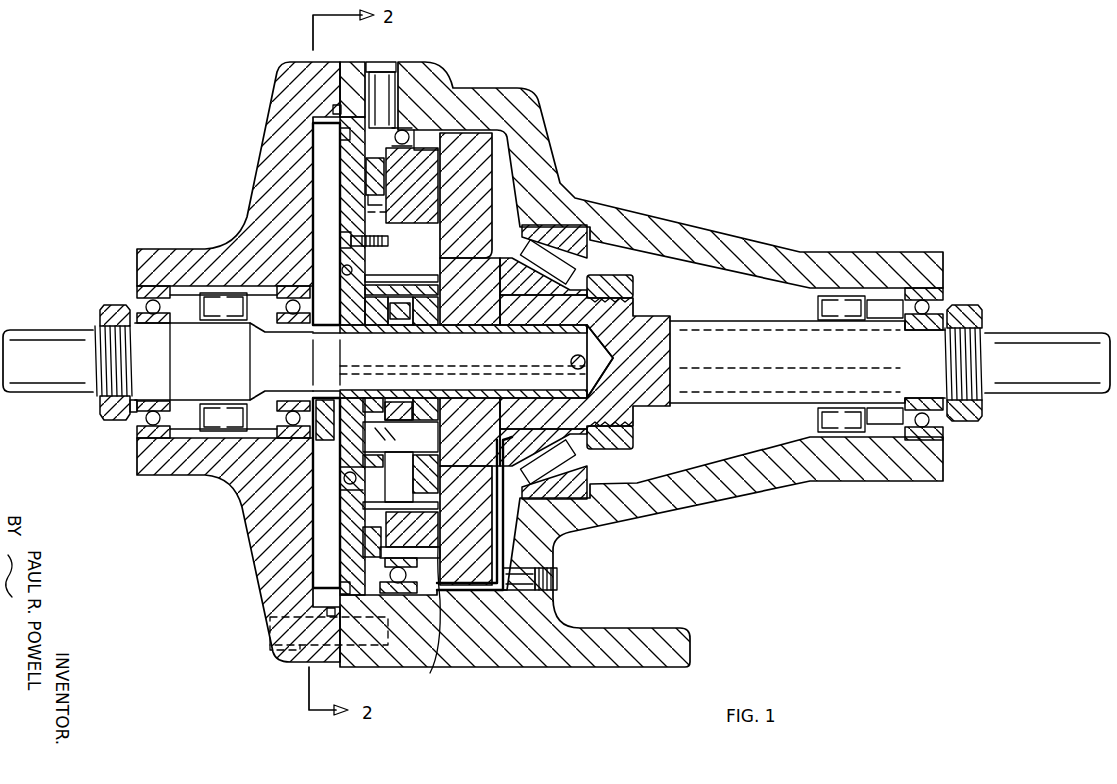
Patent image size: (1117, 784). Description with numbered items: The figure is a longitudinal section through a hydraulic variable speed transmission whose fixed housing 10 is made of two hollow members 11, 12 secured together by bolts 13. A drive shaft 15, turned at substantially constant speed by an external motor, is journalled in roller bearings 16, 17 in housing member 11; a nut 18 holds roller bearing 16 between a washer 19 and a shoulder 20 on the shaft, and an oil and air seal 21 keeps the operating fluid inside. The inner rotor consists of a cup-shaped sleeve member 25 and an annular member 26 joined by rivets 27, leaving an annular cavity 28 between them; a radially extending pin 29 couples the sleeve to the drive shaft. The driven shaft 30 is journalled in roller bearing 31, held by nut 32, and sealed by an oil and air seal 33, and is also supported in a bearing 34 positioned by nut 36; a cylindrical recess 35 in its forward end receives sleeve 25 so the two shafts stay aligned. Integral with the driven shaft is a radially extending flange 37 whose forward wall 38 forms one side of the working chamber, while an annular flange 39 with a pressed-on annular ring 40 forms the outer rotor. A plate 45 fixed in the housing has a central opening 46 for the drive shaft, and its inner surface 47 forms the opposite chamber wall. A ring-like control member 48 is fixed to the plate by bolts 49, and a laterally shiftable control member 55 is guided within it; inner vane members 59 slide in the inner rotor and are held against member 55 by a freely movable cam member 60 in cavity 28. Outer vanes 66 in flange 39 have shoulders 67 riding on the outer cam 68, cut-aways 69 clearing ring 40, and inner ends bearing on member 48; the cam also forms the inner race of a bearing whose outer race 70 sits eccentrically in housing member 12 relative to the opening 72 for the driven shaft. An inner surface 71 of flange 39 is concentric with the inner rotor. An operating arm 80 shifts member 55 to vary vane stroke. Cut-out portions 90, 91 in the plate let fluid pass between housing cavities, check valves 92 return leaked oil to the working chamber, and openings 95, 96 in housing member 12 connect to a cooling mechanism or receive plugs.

The fixed housing 10 is at (542, 95).
The housing member 11 is at (282, 80).
The housing member 12 is at (655, 232).
The bolts 13 is at (272, 642).
The drive shaft 15 is at (224, 365).
The roller bearing 16 is at (140, 290).
The roller bearing 17 is at (280, 290).
The nut 18 is at (100, 407).
The washer 19 is at (133, 414).
The shoulder 20 is at (173, 318).
The oil and air seal 21 is at (212, 442).
The sleeve member 25 is at (460, 333).
The annular member 26 is at (375, 330).
The rivets 27 is at (420, 330).
The annular cavity 28 is at (395, 398).
The radially extending pin 29 is at (571, 358).
The driven shaft 30 is at (856, 361).
The roller bearing 31 is at (946, 292).
The nut 32 is at (986, 318).
The oil and air seal 33 is at (838, 434).
The bearing 34 is at (548, 262).
The cylindrical recess 35 is at (512, 403).
The nut 36 is at (636, 284).
The radially extending flange 37 is at (490, 492).
The forward wall 38 is at (440, 428).
The annular flange 39 is at (438, 621).
The annular ring 40 is at (390, 575).
The plate 45 is at (352, 206).
The central opening 46 is at (333, 333).
The inner surface 47 is at (365, 498).
The ring-like control member 48 is at (440, 255).
The bolts 49 is at (340, 240).
The shiftable ring-like control member 55 is at (440, 272).
The vane member 59 is at (430, 442).
The cam member 60 is at (405, 400).
The outer vane 66 is at (432, 214).
The shoulder 67 is at (388, 176).
The outer cam 68 is at (440, 130).
The cut away 69 is at (383, 204).
The outer race 70 is at (410, 125).
The inner surface 71 is at (424, 520).
The opening 72 is at (895, 300).
The operating arm 80 is at (325, 431).
The cut out portions 90 is at (340, 135).
The cut out portion 91 is at (337, 167).
The check valves 92 is at (342, 270).
The opening 95 is at (392, 80).
The opening 96 is at (558, 590).